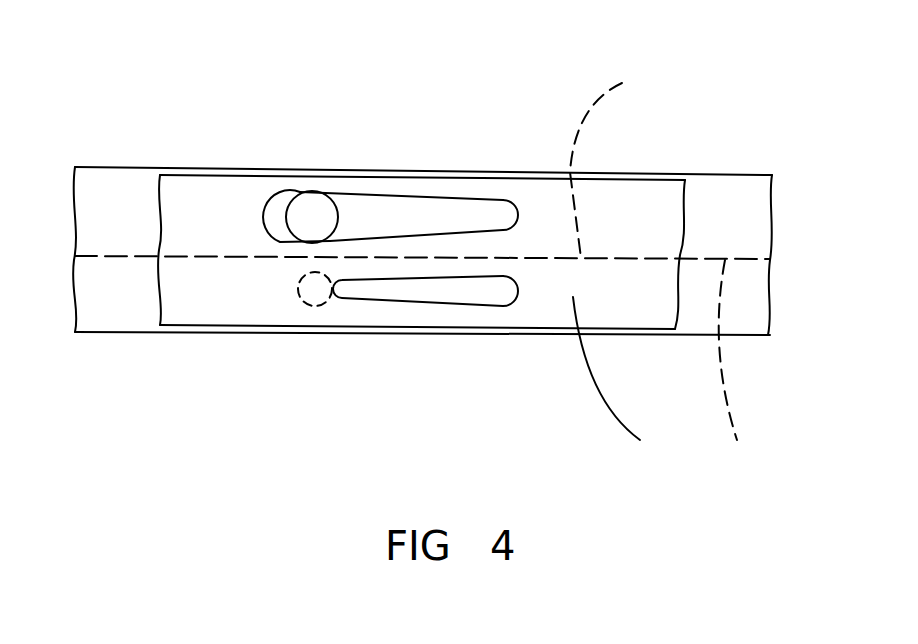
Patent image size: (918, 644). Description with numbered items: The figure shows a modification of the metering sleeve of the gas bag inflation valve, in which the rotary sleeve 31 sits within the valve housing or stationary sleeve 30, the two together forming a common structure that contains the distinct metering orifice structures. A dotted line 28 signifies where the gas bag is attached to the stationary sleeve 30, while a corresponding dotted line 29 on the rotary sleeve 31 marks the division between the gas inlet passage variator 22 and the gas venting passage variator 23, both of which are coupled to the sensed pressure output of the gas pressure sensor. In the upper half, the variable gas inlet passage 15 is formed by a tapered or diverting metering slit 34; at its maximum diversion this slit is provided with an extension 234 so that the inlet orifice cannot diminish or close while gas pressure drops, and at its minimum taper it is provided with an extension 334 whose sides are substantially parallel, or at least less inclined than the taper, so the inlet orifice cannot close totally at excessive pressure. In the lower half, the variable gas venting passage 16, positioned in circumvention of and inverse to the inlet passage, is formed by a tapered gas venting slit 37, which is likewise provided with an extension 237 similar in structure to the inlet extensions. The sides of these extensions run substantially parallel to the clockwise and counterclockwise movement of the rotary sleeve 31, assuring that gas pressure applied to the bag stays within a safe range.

The extension 234 is at (258, 202).
The variable gas inlet passage 15 is at (315, 210).
The metering slit 34 is at (352, 205).
The extension 334 is at (485, 218).
The dotted line 29 is at (625, 160).
The stationary sleeve 30 is at (715, 195).
The gas inlet passage variator 22 is at (665, 233).
The gas venting passage variator 23 is at (657, 312).
The variable gas venting passage 16 is at (314, 282).
The gas venting slit 37 is at (413, 290).
The extension 237 is at (493, 288).
The rotary sleeve 31 is at (634, 381).
The dotted line 28 is at (760, 362).